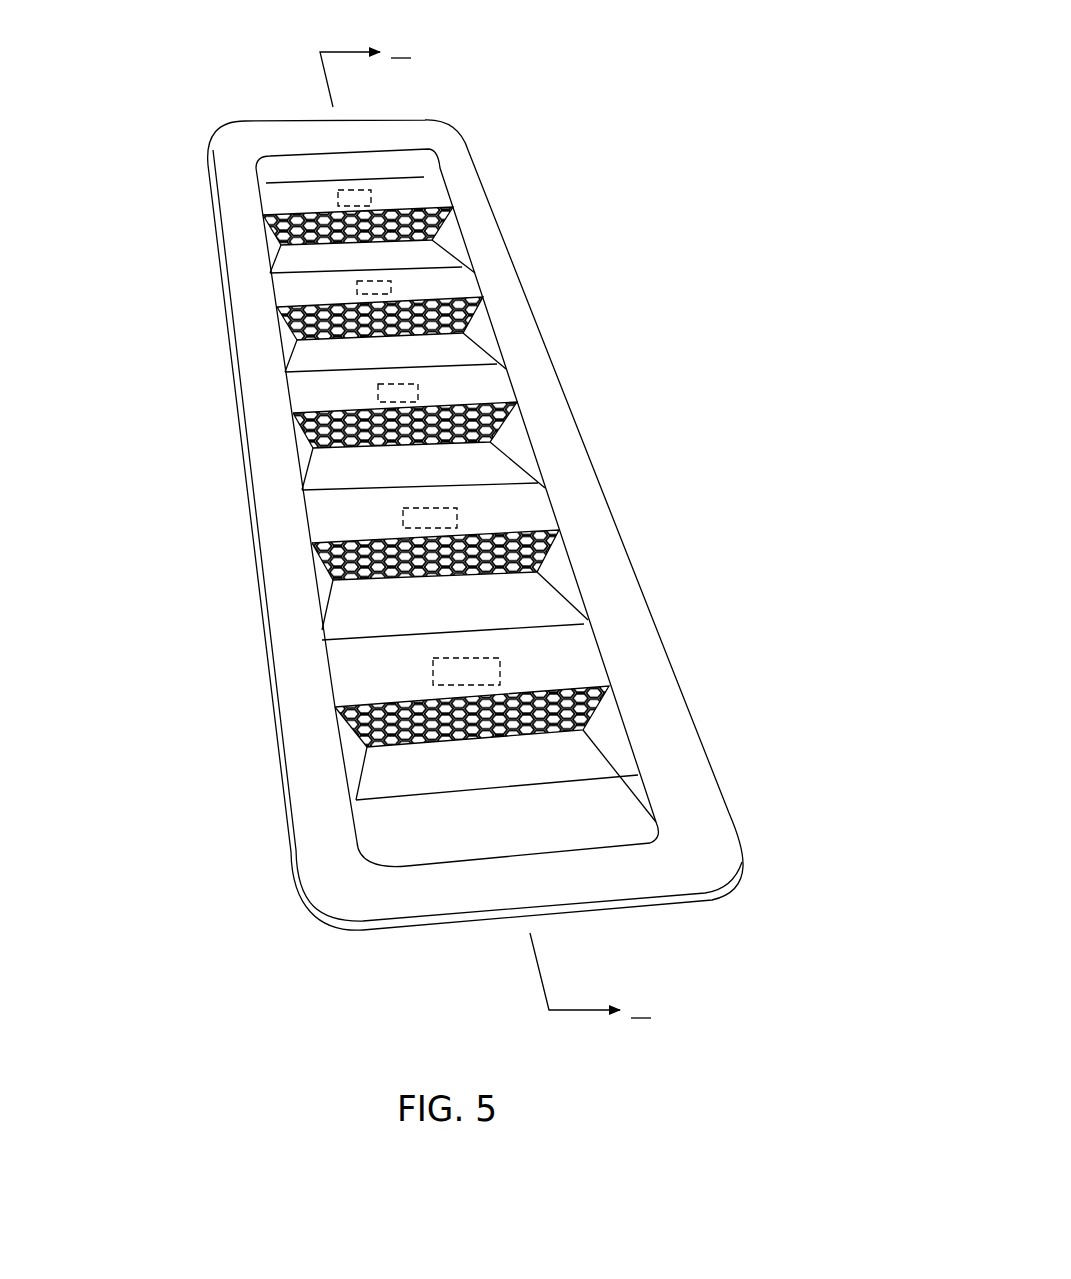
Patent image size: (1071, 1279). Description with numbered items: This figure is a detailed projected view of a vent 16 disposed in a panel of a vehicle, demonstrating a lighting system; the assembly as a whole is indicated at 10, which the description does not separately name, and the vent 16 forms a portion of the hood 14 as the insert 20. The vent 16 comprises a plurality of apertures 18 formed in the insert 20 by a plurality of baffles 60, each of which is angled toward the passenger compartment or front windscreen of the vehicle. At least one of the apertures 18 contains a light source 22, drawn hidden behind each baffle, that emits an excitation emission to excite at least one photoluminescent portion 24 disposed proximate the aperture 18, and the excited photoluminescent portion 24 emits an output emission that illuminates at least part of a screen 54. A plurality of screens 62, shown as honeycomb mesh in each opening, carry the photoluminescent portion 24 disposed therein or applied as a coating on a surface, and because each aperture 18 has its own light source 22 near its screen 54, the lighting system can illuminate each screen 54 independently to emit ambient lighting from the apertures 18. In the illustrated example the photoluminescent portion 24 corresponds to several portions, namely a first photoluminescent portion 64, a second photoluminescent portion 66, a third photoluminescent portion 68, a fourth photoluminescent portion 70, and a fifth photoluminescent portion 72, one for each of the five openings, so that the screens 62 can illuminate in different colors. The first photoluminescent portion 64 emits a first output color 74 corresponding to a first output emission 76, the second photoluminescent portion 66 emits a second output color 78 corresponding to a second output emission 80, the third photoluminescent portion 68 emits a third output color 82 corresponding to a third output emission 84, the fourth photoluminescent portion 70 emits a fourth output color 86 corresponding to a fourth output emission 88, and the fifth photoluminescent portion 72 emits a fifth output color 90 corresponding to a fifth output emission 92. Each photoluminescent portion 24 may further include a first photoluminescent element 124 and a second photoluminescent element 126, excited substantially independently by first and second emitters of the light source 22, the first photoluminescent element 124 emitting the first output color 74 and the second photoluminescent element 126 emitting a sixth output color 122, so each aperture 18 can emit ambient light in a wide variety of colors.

The vehicle component 10 is at (469, 528).
The hood 14 is at (469, 528).
The insert 20 is at (651, 165).
The vent 16 is at (222, 162).
The apertures 18 is at (418, 204).
The light source 22 is at (368, 190).
The photoluminescent portion 24 is at (371, 571).
The screen 54 is at (557, 470).
The screens 62 is at (428, 232).
The baffles 60 is at (390, 193).
The first photoluminescent portion 64 is at (333, 723).
The second photoluminescent portion 66 is at (311, 564).
The third photoluminescent portion 68 is at (295, 432).
The fourth photoluminescent portion 70 is at (276, 325).
The fifth photoluminescent portion 72 is at (268, 231).
The first output color 74 is at (411, 816).
The first output emission 76 is at (381, 750).
The second output color 78 is at (368, 628).
The second output emission 80 is at (361, 593).
The third output color 82 is at (332, 482).
The third output emission 84 is at (333, 453).
The fourth output color 86 is at (304, 378).
The fourth output emission 88 is at (309, 346).
The fifth output color 90 is at (280, 277).
The fifth output emission 92 is at (299, 249).
The sixth output color 122 is at (434, 755).
The first photoluminescent element 124 is at (593, 727).
The second photoluminescent element 126 is at (553, 708).